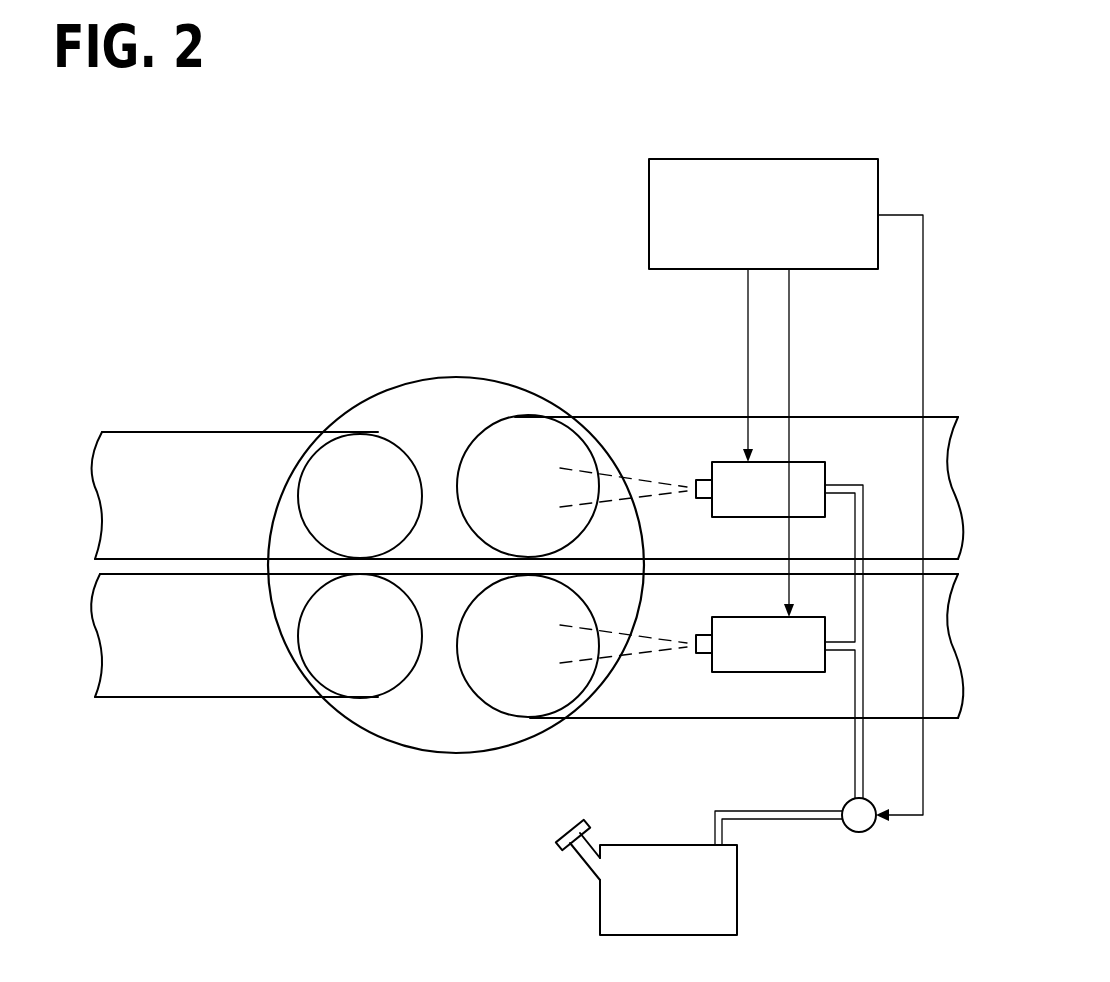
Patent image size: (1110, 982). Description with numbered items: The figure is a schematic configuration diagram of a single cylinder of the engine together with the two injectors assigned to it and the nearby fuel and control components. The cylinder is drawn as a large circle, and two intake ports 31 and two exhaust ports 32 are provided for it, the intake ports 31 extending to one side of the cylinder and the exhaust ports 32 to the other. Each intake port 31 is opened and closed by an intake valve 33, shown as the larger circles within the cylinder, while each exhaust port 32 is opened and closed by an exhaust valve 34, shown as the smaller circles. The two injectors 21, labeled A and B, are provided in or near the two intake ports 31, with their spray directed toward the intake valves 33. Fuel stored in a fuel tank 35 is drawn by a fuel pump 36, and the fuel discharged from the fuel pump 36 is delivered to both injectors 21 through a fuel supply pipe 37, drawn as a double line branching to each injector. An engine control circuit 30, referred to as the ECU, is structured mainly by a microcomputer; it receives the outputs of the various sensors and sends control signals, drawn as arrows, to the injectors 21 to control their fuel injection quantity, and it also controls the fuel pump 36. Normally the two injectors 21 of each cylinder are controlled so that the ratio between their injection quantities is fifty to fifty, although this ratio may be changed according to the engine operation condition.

The injector 21 is at (805, 460).
The engine control circuit (ECU) 30 is at (649, 212).
The intake port 31 is at (645, 447).
The exhaust port 32 is at (192, 450).
The intake valve 33 is at (502, 445).
The exhaust valve 34 is at (378, 445).
The fuel tank 35 is at (737, 893).
The fuel pump 36 is at (860, 832).
The fuel supply pipe 37 is at (855, 762).